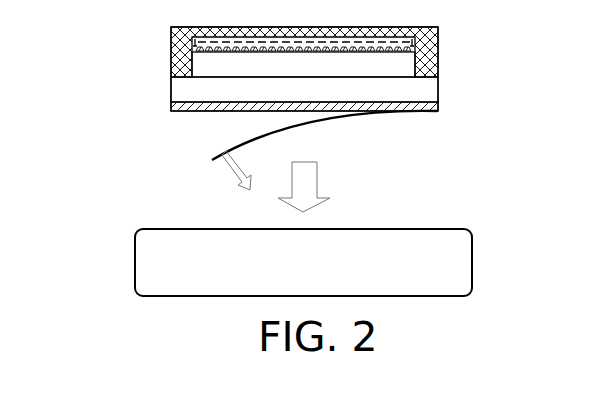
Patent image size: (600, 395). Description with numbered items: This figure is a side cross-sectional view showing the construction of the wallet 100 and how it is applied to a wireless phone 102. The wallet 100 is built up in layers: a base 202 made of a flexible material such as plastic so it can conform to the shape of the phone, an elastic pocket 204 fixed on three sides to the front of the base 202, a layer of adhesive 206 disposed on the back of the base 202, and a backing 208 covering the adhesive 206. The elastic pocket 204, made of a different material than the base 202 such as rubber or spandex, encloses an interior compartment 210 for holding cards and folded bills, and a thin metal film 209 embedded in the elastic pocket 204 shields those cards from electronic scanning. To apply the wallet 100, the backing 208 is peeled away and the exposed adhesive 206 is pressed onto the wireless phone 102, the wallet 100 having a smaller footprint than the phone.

The wallet 100 is at (111, 35).
The wireless phone 102 is at (472, 262).
The base 202 is at (438, 88).
The elastic pocket 204 is at (438, 35).
The adhesive 206 is at (438, 106).
The backing 208 is at (220, 153).
The thin metal film 209 is at (413, 44).
The interior compartment 210 is at (276, 64).